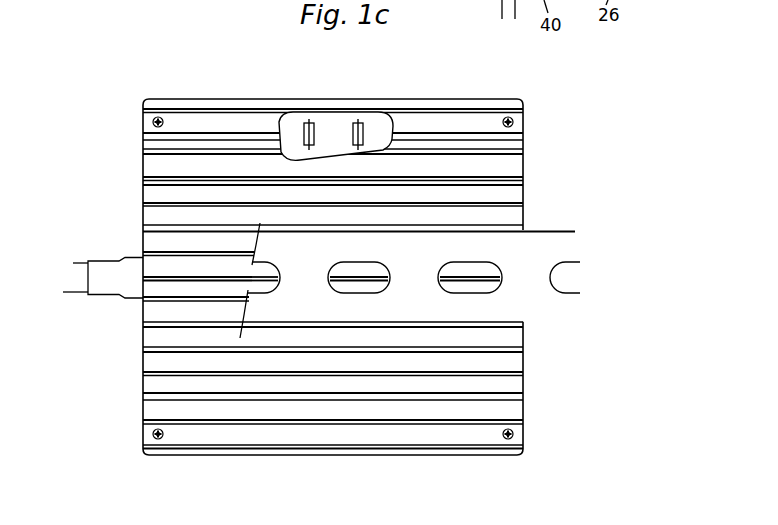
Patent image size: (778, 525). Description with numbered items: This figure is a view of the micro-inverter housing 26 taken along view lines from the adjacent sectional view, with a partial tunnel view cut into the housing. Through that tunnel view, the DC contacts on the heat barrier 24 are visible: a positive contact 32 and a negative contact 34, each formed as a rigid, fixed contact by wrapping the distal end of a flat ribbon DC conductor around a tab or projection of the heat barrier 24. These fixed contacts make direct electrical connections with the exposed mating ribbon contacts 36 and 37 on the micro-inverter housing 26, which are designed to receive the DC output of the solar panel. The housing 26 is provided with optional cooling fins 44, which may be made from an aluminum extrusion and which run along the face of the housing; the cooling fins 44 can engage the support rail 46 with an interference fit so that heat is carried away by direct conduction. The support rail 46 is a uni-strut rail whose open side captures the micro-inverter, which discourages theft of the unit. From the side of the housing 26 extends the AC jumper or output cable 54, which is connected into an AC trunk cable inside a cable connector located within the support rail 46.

The heat barrier 24 is at (277, 121).
The micro-inverter housing 26 is at (176, 94).
The positive contact 32 is at (317, 109).
The negative contact 34 is at (357, 109).
The mating ribbon contact 36 is at (299, 108).
The mating ribbon contact 37 is at (375, 110).
The cooling fins 44 is at (533, 196).
The support rail 46 is at (545, 329).
The AC jumper or output cable 54 is at (97, 247).